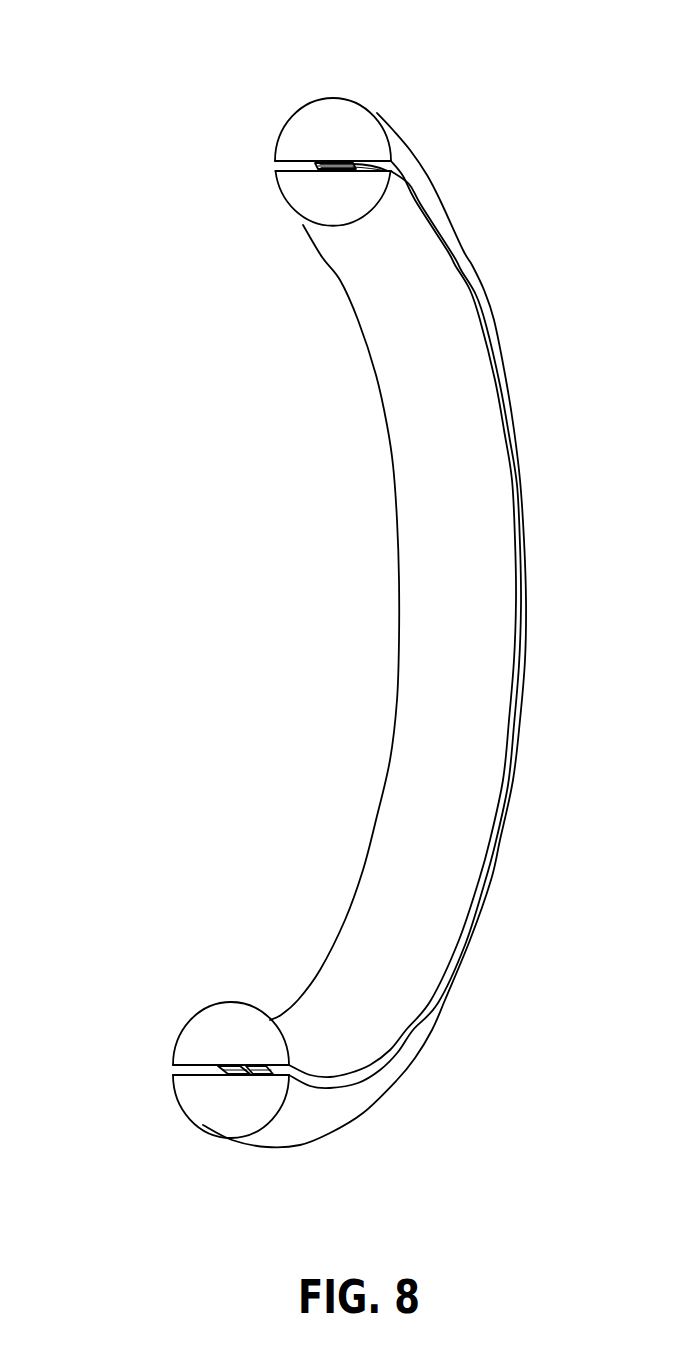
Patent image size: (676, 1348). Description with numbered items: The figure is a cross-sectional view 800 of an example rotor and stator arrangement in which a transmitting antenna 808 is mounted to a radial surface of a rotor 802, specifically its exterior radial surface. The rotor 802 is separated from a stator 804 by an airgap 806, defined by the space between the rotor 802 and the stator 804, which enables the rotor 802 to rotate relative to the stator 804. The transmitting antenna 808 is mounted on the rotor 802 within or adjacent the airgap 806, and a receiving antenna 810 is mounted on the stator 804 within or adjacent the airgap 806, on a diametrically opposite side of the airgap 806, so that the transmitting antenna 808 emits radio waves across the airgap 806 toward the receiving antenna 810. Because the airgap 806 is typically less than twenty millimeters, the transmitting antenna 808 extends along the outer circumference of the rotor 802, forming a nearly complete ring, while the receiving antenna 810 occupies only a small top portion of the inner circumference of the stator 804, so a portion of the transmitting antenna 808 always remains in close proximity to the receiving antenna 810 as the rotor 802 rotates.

The cross-sectional view 800 is at (123, 33).
The rotor 802 is at (265, 211).
The stator 804 is at (276, 117).
The airgap 806 is at (404, 182).
The transmitting antenna 808 is at (320, 167).
The receiving antenna 810 is at (350, 162).